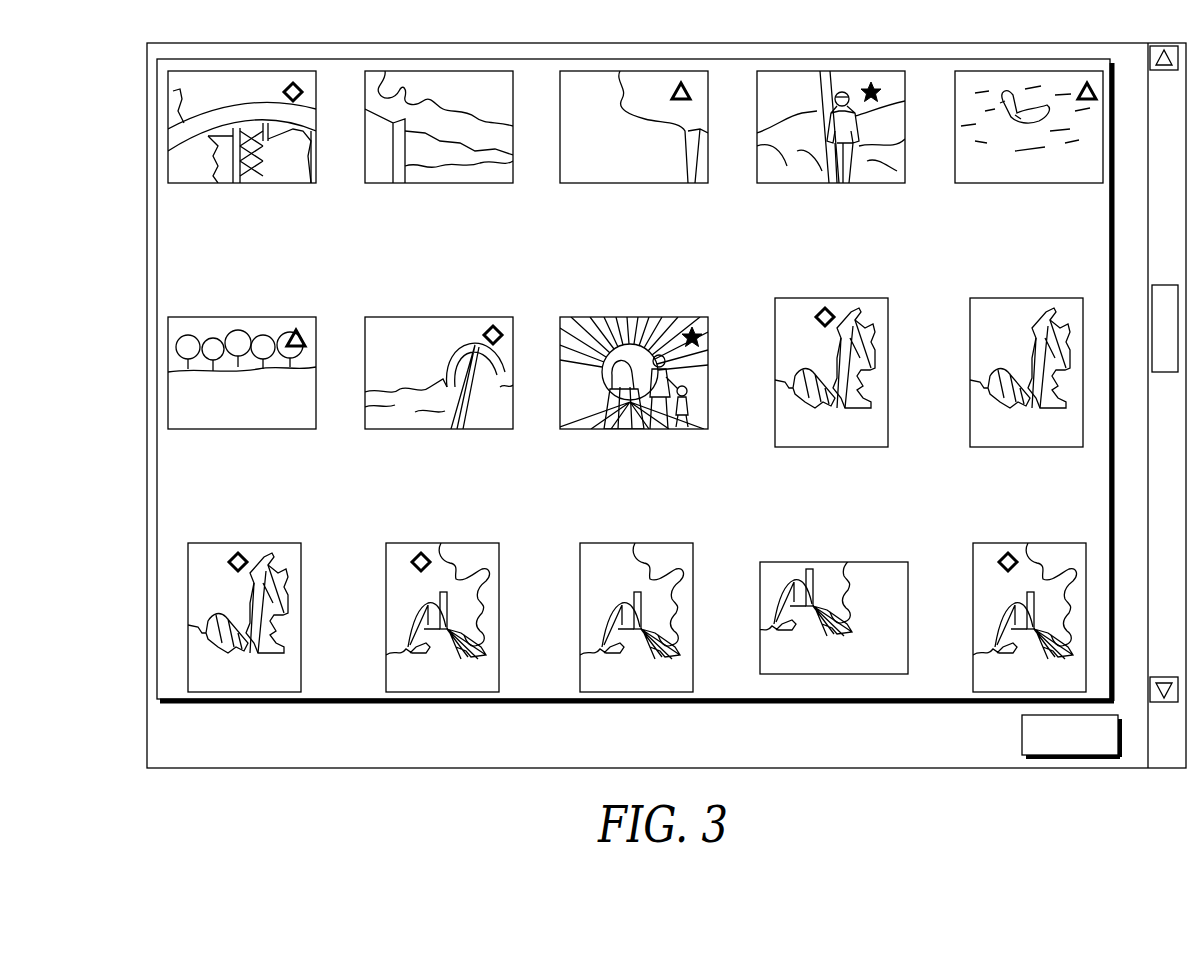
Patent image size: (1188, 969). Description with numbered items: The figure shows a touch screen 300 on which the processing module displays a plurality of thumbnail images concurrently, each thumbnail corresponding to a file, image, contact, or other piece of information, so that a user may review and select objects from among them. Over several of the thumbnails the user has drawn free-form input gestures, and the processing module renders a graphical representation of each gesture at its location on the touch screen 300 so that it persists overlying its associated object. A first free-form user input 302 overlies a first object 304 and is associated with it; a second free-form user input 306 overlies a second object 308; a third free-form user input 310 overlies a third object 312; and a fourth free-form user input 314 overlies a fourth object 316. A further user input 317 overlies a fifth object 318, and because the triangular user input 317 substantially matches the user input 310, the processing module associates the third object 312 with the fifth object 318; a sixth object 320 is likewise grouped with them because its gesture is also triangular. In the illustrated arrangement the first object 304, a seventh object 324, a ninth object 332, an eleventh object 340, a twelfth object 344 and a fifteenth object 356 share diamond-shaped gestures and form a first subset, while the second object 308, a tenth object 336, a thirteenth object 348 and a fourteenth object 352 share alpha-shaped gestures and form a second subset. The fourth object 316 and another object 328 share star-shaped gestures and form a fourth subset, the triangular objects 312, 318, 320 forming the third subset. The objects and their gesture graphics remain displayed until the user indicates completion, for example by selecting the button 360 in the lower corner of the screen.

The touch screen 300 is at (147, 78).
The first free-form user input 302 is at (296, 82).
The first object 304 is at (166, 170).
The second free-form user input 306 is at (484, 84).
The second object 308 is at (365, 192).
The third free-form user input 310 is at (683, 82).
The third object 312 is at (560, 192).
The fourth free-form user input 314 is at (873, 82).
The fourth object 316 is at (757, 192).
The user input overlying fifth object 317 is at (1088, 82).
The fifth object 318 is at (955, 192).
The sixth object 320 is at (166, 416).
The seventh object 324 is at (365, 436).
The ninth object 328 is at (560, 436).
The ninth object 332 is at (768, 313).
The tenth object 336 is at (963, 313).
The eleventh object 340 is at (175, 626).
The twelfth object 344 is at (380, 560).
The thirteenth object 348 is at (575, 560).
The fourteenth object 352 is at (790, 558).
The fifteenth object 356 is at (966, 562).
The button 360 is at (1022, 742).